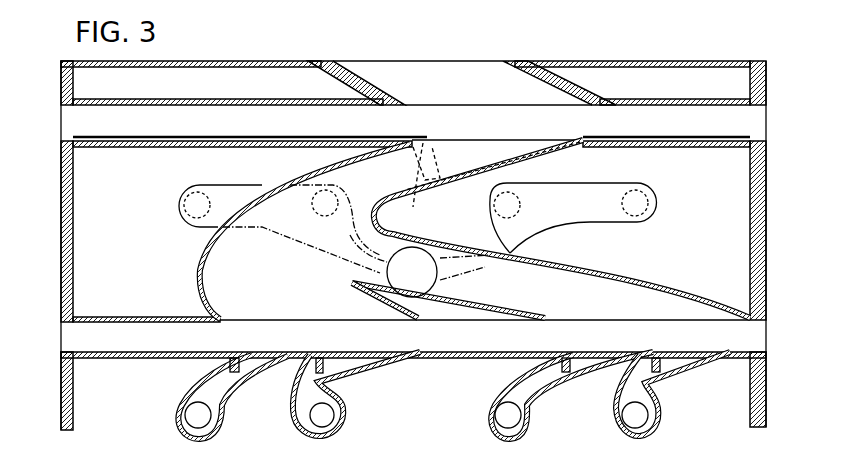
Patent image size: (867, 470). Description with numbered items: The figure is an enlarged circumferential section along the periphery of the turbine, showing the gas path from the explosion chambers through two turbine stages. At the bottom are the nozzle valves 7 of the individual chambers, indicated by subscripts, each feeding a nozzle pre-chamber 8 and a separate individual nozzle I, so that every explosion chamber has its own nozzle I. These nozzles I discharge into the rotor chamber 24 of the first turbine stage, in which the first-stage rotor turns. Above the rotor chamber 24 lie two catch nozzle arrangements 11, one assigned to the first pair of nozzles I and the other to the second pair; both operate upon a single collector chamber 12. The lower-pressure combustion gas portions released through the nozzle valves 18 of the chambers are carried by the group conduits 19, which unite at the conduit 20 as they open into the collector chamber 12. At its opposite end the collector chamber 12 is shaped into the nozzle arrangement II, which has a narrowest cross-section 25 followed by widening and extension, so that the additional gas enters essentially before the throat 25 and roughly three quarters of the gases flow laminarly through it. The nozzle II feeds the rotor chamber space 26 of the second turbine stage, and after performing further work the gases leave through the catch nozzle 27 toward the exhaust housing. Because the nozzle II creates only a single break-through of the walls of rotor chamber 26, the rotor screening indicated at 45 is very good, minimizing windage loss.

The rotor chamber space 26 is at (750, 122).
The catch nozzle 27 is at (437, 78).
The rotor screening 45 is at (88, 137).
The rotor chamber 24 is at (745, 338).
The collector chamber 12 is at (390, 177).
The nozzle arrangement II is at (472, 157).
The catch nozzle arrangement 11 is at (290, 318).
The group conduit 19 is at (230, 185).
The nozzle valve 18 is at (180, 204).
The narrowest cross-section 25 is at (418, 212).
The conduit 20 is at (308, 248).
The nozzle valve 7 is at (198, 412).
The nozzle I is at (253, 360).
The nozzle pre-chamber 8 is at (528, 410).